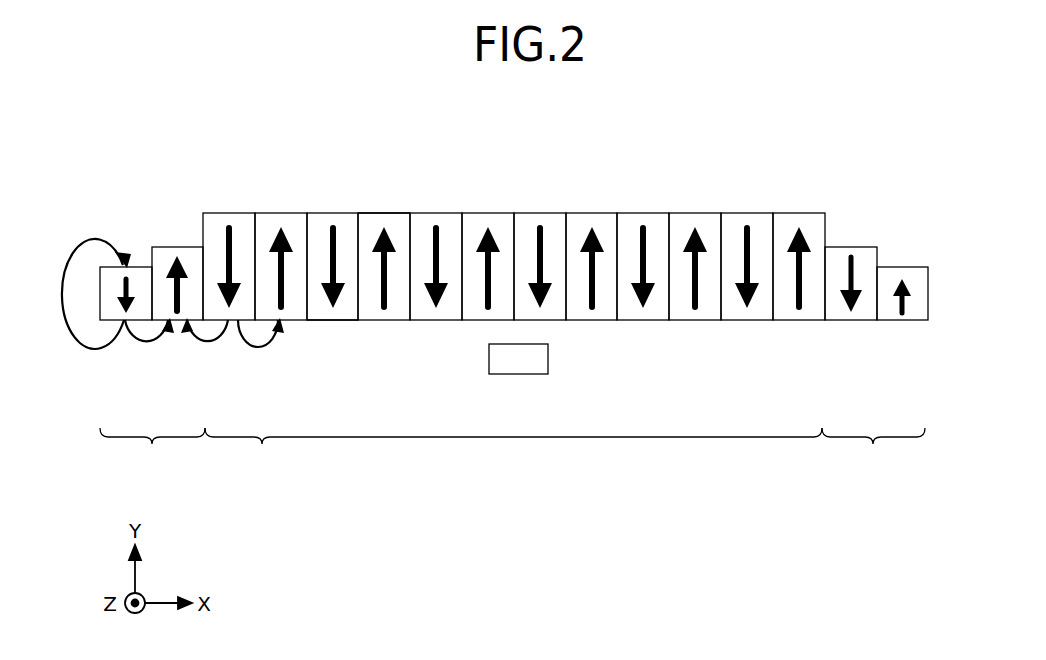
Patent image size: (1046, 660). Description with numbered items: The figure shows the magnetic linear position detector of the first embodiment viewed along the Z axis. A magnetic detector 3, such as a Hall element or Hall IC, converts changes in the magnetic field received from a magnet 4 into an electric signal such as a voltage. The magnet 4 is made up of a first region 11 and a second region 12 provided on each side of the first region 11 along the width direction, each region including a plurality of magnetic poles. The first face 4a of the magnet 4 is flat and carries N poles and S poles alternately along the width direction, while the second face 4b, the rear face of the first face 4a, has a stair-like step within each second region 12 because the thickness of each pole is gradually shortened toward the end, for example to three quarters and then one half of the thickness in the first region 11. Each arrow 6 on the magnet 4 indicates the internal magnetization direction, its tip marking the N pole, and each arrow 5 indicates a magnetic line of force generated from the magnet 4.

The magnetic detector 3 is at (503, 358).
The magnet 4 is at (647, 221).
The first face 4a is at (332, 322).
The second face 4b is at (389, 212).
The arrow 5 is at (98, 239).
The arrow 6 is at (180, 262).
The first region 11 is at (513, 453).
The second region 12 is at (514, 362).